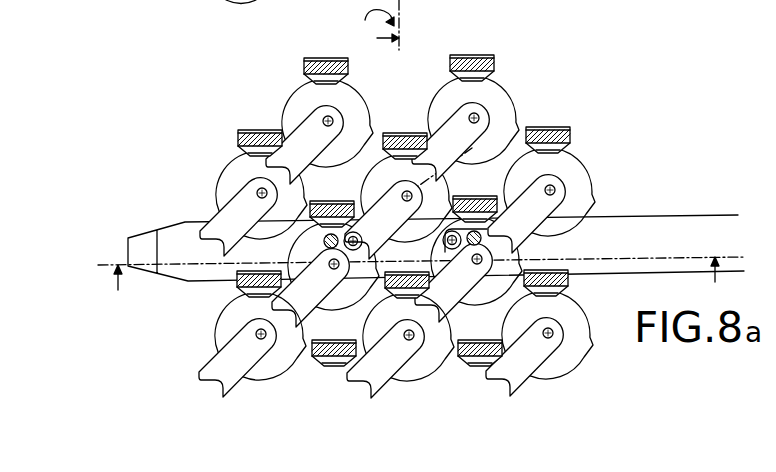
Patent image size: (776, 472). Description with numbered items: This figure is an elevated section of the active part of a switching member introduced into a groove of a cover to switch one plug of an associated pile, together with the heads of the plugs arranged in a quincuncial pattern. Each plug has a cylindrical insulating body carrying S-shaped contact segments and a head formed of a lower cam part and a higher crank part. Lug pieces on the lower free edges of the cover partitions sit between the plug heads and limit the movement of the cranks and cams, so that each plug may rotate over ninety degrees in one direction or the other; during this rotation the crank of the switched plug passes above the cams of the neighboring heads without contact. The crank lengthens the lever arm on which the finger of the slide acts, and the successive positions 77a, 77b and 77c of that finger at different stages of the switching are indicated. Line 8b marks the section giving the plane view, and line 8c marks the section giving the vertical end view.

The finger position 77a is at (334, 286).
The finger position 77b is at (408, 301).
The finger position 77c is at (470, 266).
The section line 8b— 8b is at (414, 288).
The section line 8c— 8c is at (382, 32).